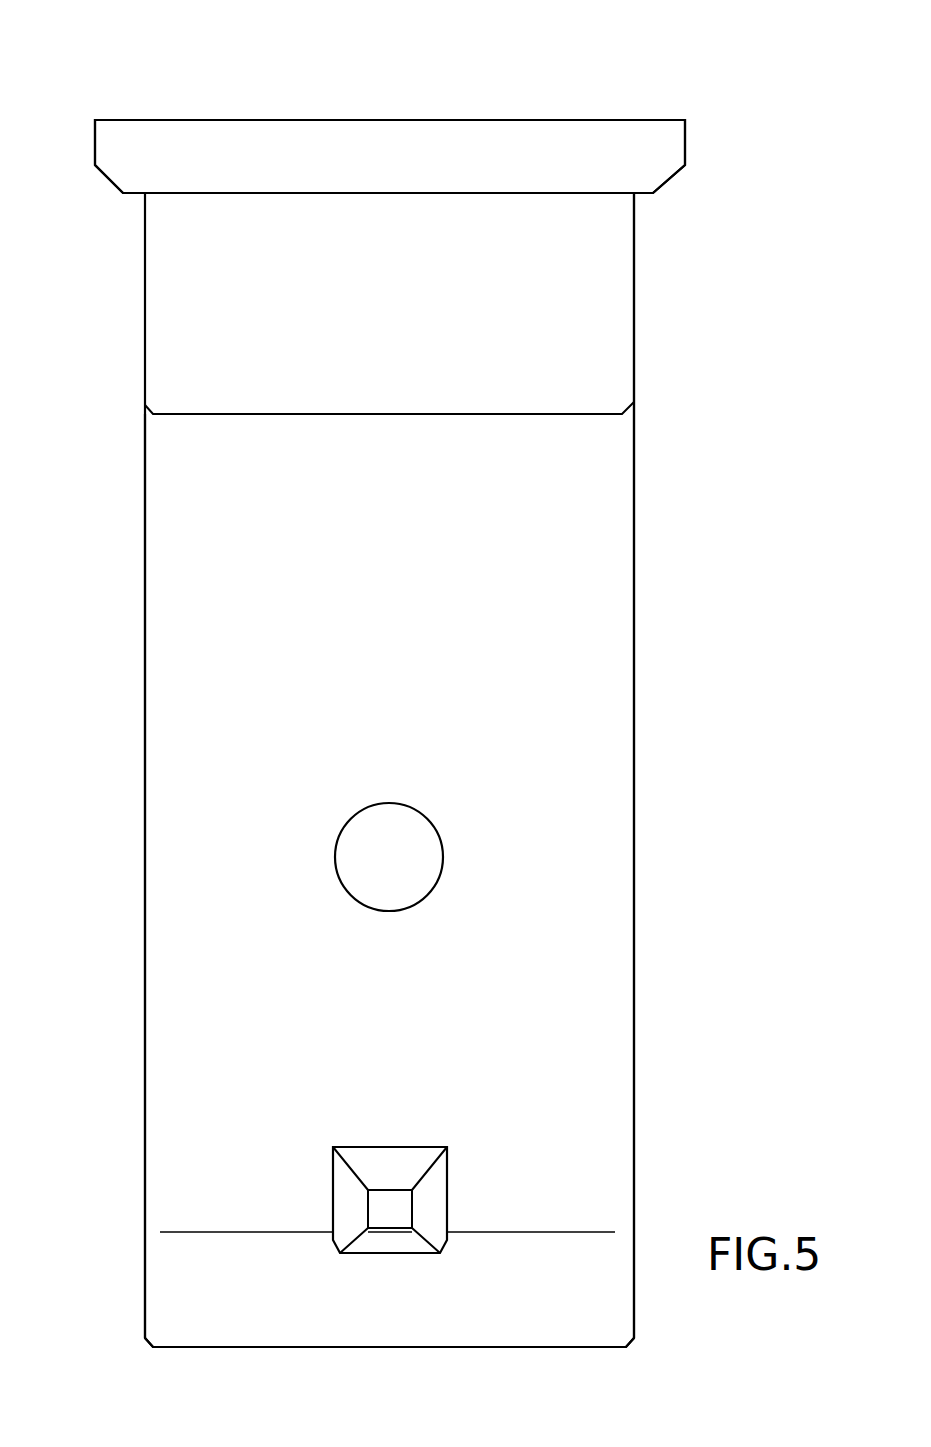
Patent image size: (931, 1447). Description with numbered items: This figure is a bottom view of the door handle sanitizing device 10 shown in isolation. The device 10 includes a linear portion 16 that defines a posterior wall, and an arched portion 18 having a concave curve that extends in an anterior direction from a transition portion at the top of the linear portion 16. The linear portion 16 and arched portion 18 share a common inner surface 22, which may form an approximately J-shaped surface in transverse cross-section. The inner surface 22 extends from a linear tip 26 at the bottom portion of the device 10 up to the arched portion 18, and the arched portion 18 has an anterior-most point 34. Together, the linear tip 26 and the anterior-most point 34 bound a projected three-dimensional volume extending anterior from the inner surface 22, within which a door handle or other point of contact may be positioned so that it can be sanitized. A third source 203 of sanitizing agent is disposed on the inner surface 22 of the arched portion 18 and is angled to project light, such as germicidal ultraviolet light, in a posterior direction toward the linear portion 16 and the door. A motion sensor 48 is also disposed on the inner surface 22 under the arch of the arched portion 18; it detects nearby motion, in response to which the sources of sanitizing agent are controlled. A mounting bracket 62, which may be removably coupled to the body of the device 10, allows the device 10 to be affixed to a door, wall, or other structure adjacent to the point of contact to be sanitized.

The door handle sanitizing device 10 is at (278, 105).
The mounting bracket 62 is at (401, 172).
The linear portion 16 is at (135, 308).
The linear tip 26 is at (634, 348).
The inner surface 22 is at (401, 588).
The arched portion 18 is at (135, 933).
The anterior-most point 34 is at (536, 1347).
The motion sensor 48 is at (401, 867).
The third source 203 is at (395, 1198).